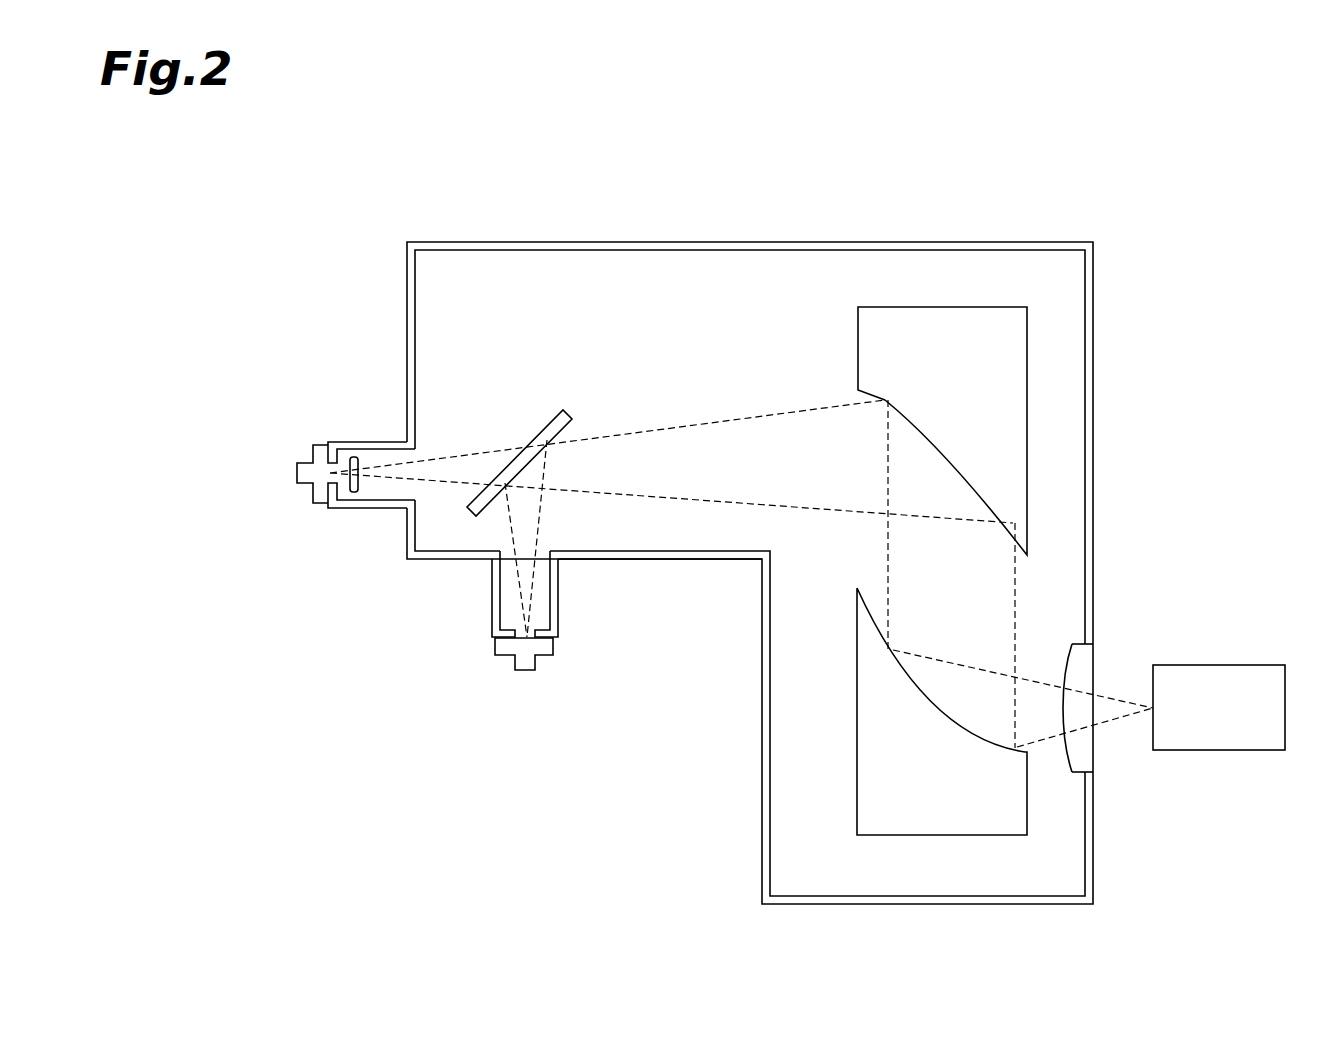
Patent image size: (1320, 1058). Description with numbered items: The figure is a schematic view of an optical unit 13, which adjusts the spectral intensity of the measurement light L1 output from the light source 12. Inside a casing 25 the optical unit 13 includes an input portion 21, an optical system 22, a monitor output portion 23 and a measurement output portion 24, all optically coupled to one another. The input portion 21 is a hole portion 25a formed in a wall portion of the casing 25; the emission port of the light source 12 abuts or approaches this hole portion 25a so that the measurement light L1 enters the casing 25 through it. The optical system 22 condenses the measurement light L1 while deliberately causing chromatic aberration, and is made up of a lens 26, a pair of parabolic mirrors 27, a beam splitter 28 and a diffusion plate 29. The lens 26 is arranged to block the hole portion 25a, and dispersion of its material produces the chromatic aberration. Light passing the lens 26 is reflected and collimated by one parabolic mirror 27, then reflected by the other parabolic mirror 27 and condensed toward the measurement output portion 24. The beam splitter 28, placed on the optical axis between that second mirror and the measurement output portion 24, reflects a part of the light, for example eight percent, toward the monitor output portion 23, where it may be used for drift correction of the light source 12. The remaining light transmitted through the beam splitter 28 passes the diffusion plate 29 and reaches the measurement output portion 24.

The light source 12 is at (1258, 665).
The optical unit 13 is at (384, 201).
The input portion 21 is at (1094, 658).
The optical system 22 is at (1045, 303).
The monitor output portion 23 is at (556, 645).
The measurement output portion 24 is at (322, 450).
The casing 25 is at (743, 242).
The hole portion 25a is at (1158, 666).
The lens 26 is at (1095, 753).
The parabolic mirror 27 is at (875, 348).
The beam splitter 28 is at (548, 428).
The diffusion plate 29 is at (354, 456).
The measurement light L1 is at (705, 423).